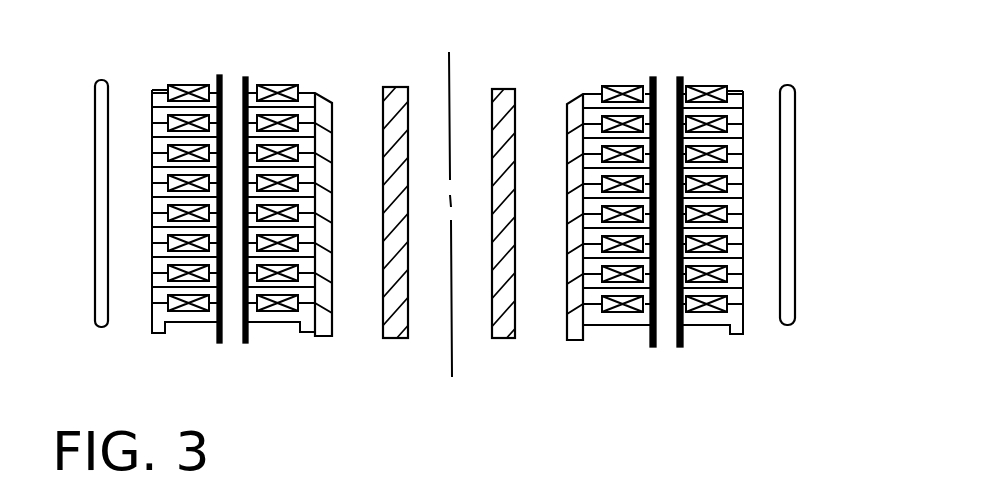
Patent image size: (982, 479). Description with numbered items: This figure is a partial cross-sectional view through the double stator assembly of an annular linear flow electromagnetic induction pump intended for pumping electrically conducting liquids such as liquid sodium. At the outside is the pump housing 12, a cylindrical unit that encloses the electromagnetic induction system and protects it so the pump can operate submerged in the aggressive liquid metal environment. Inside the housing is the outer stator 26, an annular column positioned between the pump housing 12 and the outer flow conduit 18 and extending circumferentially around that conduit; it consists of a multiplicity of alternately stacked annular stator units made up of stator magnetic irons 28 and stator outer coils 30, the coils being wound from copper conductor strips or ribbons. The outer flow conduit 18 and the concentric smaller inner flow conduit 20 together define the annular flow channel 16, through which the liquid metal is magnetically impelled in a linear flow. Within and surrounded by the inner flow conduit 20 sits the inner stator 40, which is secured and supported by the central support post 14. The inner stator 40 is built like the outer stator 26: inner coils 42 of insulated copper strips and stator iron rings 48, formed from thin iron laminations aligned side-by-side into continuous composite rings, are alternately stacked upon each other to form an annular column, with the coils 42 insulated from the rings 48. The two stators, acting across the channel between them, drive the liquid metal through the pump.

The pump housing 12 is at (795, 108).
The central support post 14 is at (505, 88).
The annular flow channel 16 is at (668, 343).
The outer flow conduit 18 is at (681, 80).
The inner flow conduit 20 is at (653, 79).
The outer stator 26 is at (707, 313).
The stator magnetic irons 28 is at (173, 307).
The stator outer coils 30 is at (190, 323).
The inner stator 40 is at (603, 312).
The inner coils 42 is at (307, 327).
The stator iron rings 48 is at (280, 324).